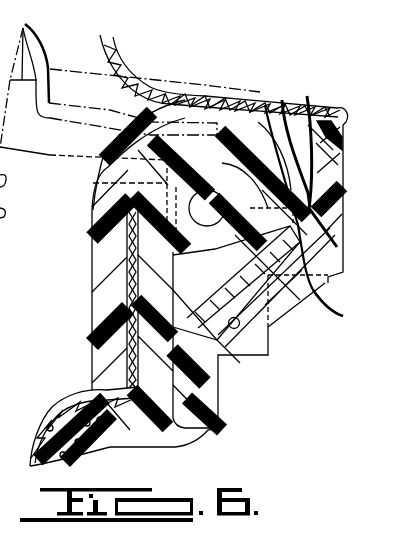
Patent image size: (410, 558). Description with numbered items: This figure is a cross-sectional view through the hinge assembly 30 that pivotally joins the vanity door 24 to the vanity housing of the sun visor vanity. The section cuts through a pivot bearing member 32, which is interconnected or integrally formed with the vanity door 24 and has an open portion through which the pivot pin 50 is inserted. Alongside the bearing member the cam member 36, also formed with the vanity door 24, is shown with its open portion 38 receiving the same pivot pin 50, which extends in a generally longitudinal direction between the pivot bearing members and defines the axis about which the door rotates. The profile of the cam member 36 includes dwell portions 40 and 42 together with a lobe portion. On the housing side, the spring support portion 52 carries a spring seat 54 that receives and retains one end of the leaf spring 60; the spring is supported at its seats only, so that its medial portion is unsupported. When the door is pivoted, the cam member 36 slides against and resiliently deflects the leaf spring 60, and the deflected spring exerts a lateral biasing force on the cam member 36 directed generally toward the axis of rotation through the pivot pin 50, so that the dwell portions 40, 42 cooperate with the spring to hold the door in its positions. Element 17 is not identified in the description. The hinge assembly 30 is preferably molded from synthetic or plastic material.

The curved guide strip 17 is at (140, 60).
The vanity door 24 is at (53, 50).
The hinge assembly 30 is at (270, 362).
The pivot bearing member 32 is at (93, 183).
The cam member 36 is at (262, 140).
The open portion 38 is at (181, 253).
The dwell portion 40 is at (308, 118).
The dwell portion 42 is at (298, 296).
The pivot pin 50 is at (240, 133).
The spring support portion 52 is at (332, 316).
The spring seat 54 is at (240, 327).
The leaf spring 60 is at (281, 306).